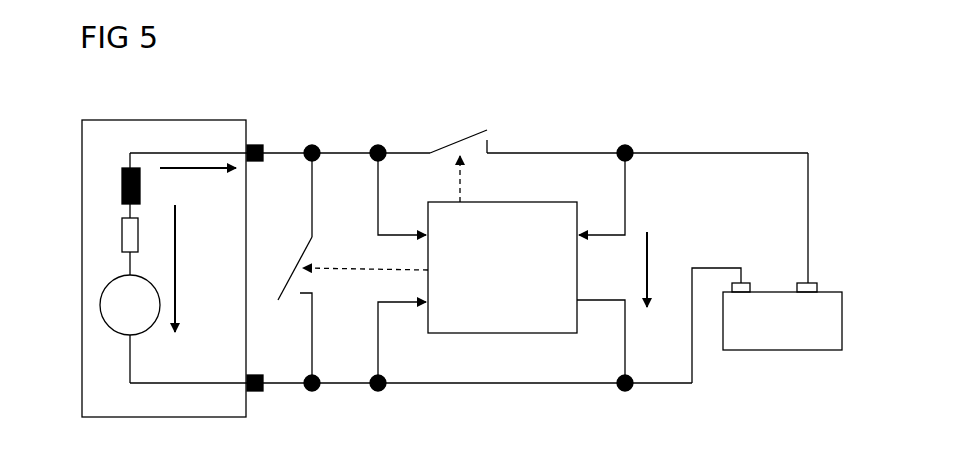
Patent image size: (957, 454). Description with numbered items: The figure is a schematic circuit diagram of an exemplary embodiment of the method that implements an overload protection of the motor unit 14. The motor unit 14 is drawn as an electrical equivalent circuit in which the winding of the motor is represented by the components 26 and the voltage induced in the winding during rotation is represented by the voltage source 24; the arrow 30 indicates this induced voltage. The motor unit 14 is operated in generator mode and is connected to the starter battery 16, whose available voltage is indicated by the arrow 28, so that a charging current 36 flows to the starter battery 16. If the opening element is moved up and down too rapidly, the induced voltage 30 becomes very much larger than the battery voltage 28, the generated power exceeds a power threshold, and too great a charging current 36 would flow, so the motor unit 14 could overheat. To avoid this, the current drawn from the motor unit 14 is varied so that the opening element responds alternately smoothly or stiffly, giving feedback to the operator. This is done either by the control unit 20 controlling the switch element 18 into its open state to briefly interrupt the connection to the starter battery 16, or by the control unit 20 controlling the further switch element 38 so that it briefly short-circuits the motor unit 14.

The motor unit 14 is at (82, 135).
The starter battery 16 is at (842, 322).
The switch element 18 is at (481, 128).
The control unit 20 is at (490, 335).
The voltage source 24 is at (100, 308).
The winding components 26 is at (110, 170).
The arrow indicating battery voltage 28 is at (650, 258).
The arrow indicating induced voltage 30 is at (177, 256).
The charging current 36 is at (194, 172).
The further switch element 38 is at (286, 258).